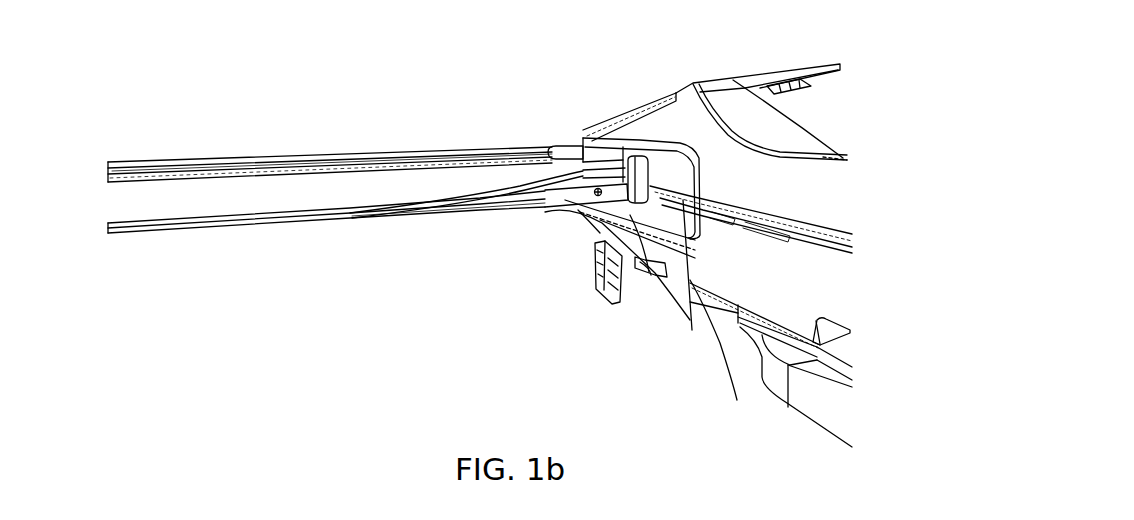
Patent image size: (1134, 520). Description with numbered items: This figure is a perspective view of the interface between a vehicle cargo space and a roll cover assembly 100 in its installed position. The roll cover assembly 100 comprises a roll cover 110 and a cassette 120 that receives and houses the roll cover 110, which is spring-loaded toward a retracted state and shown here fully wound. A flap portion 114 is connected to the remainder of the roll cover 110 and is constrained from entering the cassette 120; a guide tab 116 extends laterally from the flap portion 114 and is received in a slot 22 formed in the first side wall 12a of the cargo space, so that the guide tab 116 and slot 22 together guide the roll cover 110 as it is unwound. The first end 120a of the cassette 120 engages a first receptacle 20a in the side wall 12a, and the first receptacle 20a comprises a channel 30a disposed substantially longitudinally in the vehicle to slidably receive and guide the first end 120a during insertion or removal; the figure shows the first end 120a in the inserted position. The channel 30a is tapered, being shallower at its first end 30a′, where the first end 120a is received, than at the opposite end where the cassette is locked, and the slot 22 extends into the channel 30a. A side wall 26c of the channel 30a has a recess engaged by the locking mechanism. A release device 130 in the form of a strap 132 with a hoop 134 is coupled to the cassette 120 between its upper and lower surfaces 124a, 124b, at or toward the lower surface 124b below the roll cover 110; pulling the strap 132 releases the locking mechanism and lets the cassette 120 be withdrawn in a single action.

The roll cover assembly 100 is at (245, 260).
The roll cover 110 is at (274, 206).
The flap portion 114 is at (350, 214).
The guide tab 116 is at (551, 214).
The cassette 120 is at (242, 162).
The first end of the cassette 120a is at (563, 143).
The upper surface of the cassette 124a is at (367, 158).
The lower surface of the cassette 124b is at (487, 206).
The release device 130 is at (648, 272).
The strap 132 is at (622, 206).
The hoop 134 is at (685, 160).
The first side wall 12a is at (690, 126).
The first receptacle 20a is at (607, 136).
The slot 22 is at (787, 222).
The side wall of the channel 26c is at (618, 304).
The channel 30a is at (686, 300).
The first end of the channel 30a′ is at (737, 400).